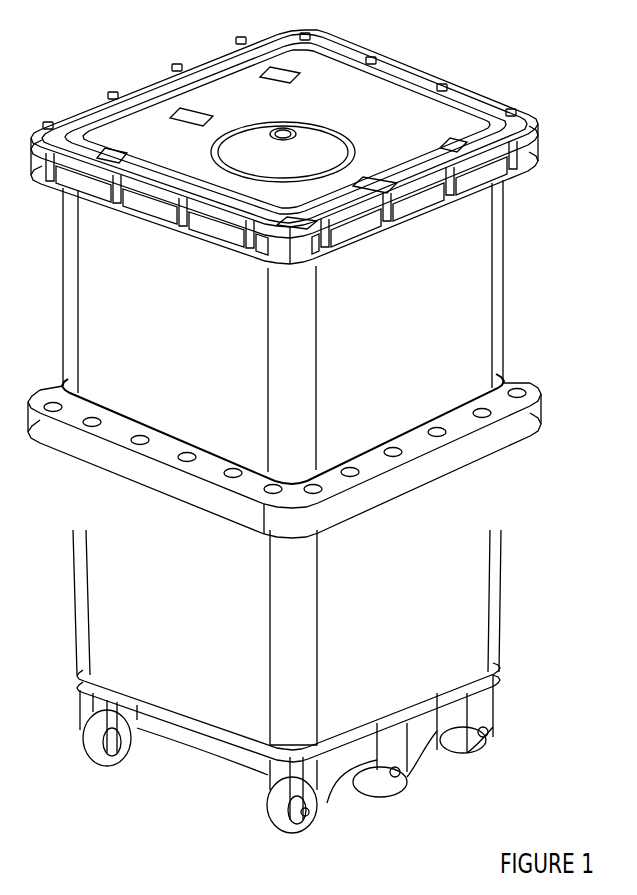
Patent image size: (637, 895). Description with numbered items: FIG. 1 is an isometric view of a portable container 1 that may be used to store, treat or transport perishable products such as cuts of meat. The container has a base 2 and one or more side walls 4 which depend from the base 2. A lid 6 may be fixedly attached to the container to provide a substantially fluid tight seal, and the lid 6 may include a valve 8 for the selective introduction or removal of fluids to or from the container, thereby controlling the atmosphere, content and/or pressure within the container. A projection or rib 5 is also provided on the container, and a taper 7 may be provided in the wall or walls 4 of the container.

The portable container 1 is at (580, 534).
The base 2 is at (212, 737).
The side wall 4 is at (105, 300).
The projection or rib 5 is at (543, 402).
The lid 6 is at (468, 93).
The taper 7 is at (510, 229).
The valve 8 is at (283, 128).